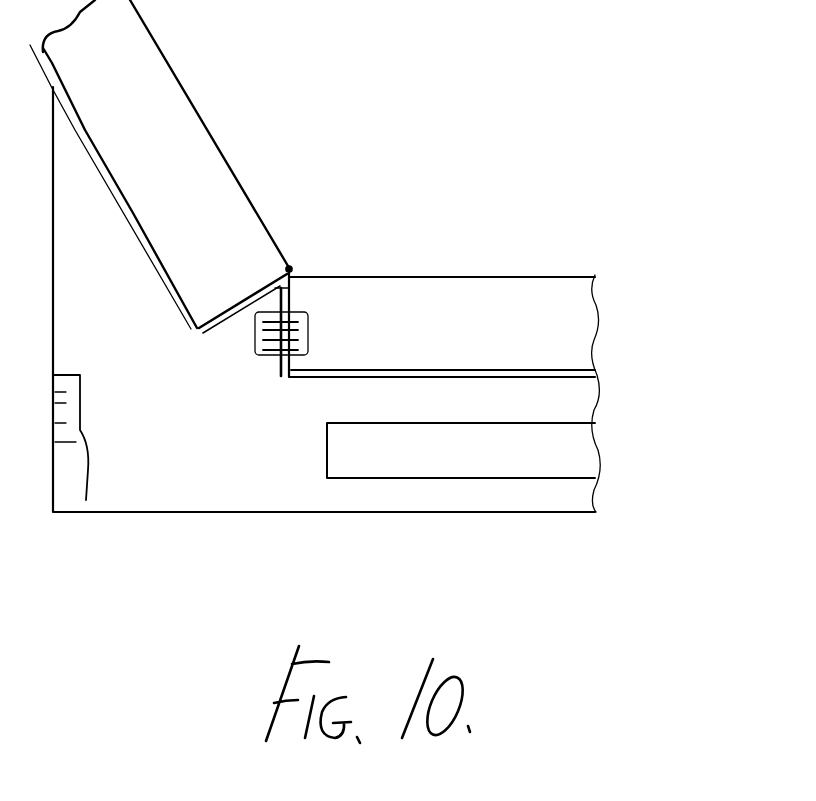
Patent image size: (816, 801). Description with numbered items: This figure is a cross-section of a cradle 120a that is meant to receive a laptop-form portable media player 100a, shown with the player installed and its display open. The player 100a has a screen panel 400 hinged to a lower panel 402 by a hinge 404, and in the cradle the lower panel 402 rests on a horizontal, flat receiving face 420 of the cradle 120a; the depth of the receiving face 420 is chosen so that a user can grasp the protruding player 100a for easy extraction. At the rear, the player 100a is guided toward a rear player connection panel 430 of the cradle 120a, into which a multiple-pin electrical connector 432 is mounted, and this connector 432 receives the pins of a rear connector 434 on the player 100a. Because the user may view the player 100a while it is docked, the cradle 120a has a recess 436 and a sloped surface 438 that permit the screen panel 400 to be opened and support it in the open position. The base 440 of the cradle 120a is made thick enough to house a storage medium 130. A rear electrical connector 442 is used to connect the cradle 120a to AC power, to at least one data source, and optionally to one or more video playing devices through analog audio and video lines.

The screen panel 400 is at (178, 148).
The sloped surface 438 is at (135, 212).
The hinge 404 is at (292, 266).
The portable media player 100a is at (421, 257).
The rear connector 434 is at (310, 320).
The lower panel 402 is at (503, 333).
The receiving face 420 is at (597, 373).
The storage medium 130 is at (580, 442).
The recess 436 is at (228, 318).
The multiple-pin electrical connector 432 is at (242, 335).
The rear player connection panel 430 is at (277, 366).
The cradle 120a is at (212, 431).
The base 440 is at (287, 489).
The rear electrical connector 442 is at (86, 500).